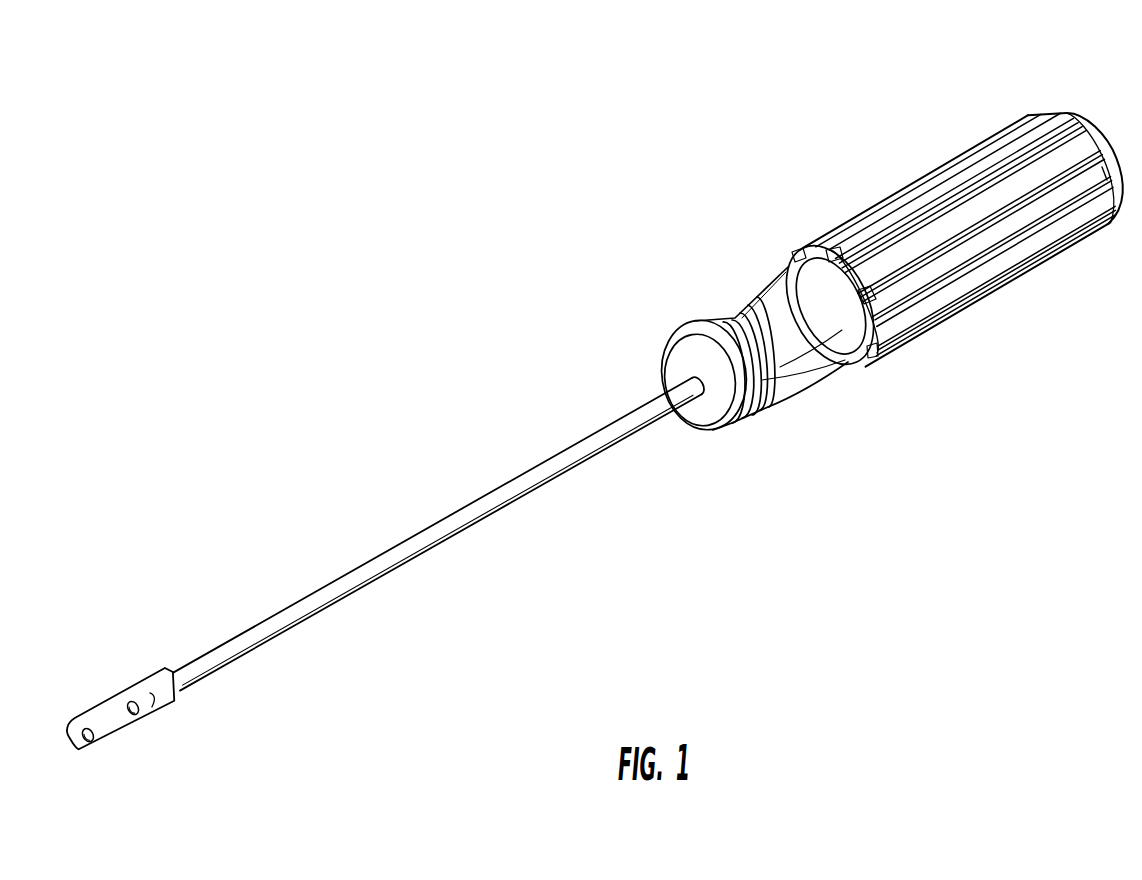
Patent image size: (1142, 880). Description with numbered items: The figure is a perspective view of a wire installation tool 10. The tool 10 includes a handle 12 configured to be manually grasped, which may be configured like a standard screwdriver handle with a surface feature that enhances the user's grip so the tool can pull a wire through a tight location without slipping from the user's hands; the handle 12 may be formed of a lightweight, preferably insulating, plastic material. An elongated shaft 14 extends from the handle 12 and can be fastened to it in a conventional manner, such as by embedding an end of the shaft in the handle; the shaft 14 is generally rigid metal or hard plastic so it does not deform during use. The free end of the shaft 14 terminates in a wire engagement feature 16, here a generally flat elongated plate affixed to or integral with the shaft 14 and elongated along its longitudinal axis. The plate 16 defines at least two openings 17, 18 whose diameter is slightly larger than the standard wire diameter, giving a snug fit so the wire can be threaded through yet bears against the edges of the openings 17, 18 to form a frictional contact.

The wire installation tool 10 is at (953, 128).
The handle 12 is at (922, 334).
The elongated shaft 14 is at (481, 520).
The wire engagement feature 16 is at (125, 690).
The opening 17 is at (90, 747).
The opening 18 is at (142, 713).